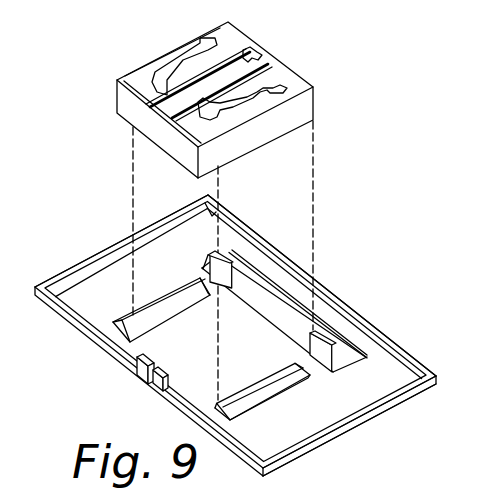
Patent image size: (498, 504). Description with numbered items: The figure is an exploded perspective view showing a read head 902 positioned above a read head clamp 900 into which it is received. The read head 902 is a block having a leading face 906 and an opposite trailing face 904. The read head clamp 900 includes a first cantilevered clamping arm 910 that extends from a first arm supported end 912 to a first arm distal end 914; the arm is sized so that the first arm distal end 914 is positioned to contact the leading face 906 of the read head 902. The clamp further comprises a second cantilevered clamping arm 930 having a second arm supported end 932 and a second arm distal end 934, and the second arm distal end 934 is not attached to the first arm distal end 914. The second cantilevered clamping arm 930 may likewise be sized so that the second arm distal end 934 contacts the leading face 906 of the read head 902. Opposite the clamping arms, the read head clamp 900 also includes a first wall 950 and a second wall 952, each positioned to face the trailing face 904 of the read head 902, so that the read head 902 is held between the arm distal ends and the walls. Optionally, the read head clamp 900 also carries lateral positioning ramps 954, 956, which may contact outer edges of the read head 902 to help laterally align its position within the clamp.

The read head clamp 900 is at (248, 330).
The read head 902 is at (183, 67).
The trailing face 904 is at (293, 75).
The leading face 906 is at (125, 103).
The first cantilevered clamping arm 910 is at (380, 413).
The first arm supported end 912 is at (410, 375).
The first arm distal end 914 is at (155, 389).
The second cantilevered clamping arm 930 is at (82, 273).
The second arm supported end 932 is at (212, 216).
The second arm distal end 934 is at (138, 372).
The first wall 950 is at (318, 347).
The second wall 952 is at (223, 272).
The lateral positioning ramp 954 is at (268, 380).
The lateral positioning ramp 956 is at (163, 307).